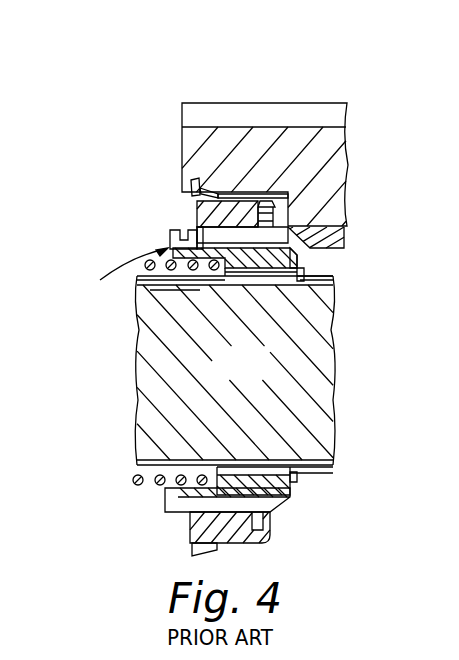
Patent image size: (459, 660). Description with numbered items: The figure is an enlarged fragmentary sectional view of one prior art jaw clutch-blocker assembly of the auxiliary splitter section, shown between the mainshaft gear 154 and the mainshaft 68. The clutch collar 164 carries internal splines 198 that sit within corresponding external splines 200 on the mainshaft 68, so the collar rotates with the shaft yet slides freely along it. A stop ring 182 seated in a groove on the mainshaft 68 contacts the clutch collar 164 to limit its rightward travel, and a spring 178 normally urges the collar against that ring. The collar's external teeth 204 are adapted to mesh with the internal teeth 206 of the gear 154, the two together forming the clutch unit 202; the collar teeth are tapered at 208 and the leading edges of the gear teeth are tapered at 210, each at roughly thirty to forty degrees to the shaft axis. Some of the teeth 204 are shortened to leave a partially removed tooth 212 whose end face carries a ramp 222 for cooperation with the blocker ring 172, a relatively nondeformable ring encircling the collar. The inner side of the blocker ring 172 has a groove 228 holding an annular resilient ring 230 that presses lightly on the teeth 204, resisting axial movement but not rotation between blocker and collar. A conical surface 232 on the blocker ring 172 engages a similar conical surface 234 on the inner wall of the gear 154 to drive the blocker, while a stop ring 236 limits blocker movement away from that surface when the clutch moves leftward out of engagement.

The mainshaft gear 154 is at (283, 103).
The conical surface 232 is at (205, 187).
The conical surface 234 is at (197, 192).
The stop ring 236 is at (217, 197).
The blocker ring 172 is at (197, 210).
The partially removed tooth 212 is at (173, 235).
The clutch unit 202 is at (178, 254).
The clutch collar 164 is at (160, 296).
The spring 178 is at (158, 315).
The mainshaft 68 is at (158, 387).
The external teeth 204 is at (177, 500).
The taper or ramp 222 is at (196, 234).
The groove 228 is at (272, 210).
The annular resilient ring 230 is at (272, 216).
The internal teeth 206 is at (338, 237).
The taper 210 is at (303, 254).
The stop ring 182 is at (305, 270).
The external splines 200 is at (325, 283).
The internal splines 198 is at (322, 322).
The taper 208 is at (277, 498).